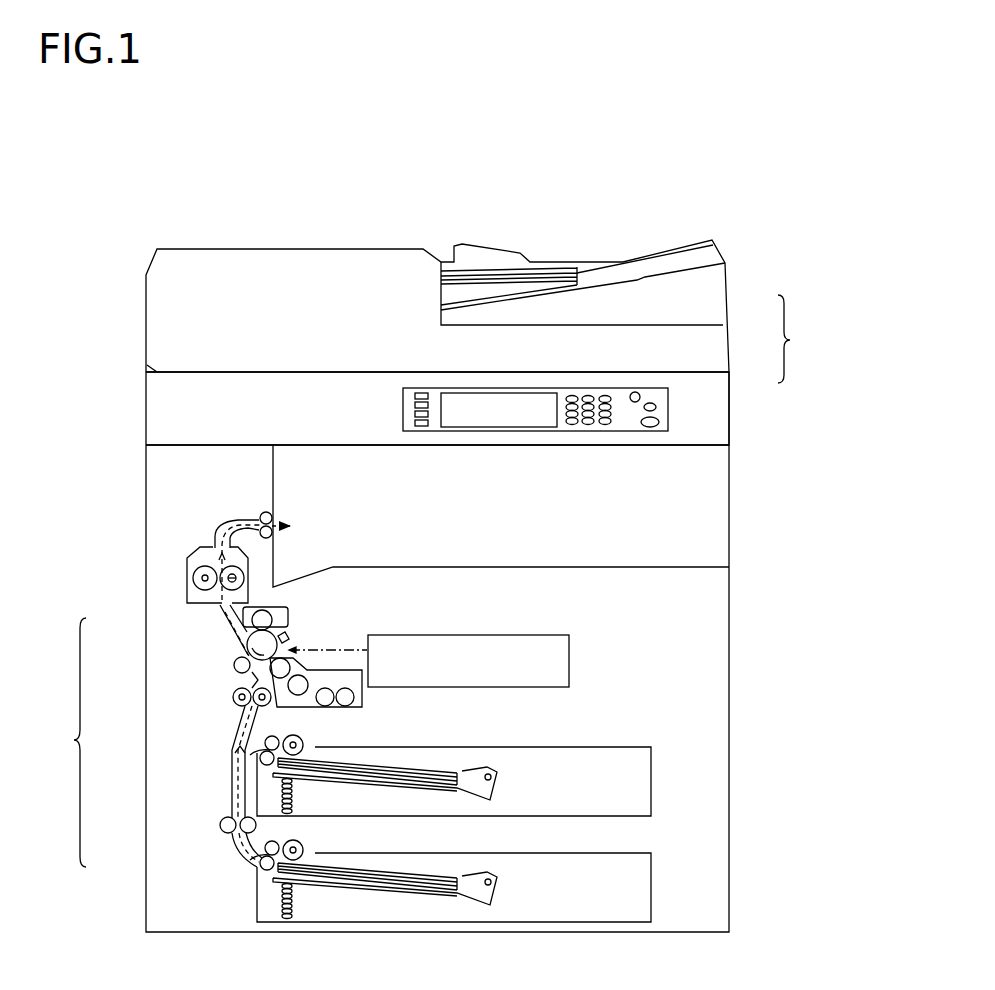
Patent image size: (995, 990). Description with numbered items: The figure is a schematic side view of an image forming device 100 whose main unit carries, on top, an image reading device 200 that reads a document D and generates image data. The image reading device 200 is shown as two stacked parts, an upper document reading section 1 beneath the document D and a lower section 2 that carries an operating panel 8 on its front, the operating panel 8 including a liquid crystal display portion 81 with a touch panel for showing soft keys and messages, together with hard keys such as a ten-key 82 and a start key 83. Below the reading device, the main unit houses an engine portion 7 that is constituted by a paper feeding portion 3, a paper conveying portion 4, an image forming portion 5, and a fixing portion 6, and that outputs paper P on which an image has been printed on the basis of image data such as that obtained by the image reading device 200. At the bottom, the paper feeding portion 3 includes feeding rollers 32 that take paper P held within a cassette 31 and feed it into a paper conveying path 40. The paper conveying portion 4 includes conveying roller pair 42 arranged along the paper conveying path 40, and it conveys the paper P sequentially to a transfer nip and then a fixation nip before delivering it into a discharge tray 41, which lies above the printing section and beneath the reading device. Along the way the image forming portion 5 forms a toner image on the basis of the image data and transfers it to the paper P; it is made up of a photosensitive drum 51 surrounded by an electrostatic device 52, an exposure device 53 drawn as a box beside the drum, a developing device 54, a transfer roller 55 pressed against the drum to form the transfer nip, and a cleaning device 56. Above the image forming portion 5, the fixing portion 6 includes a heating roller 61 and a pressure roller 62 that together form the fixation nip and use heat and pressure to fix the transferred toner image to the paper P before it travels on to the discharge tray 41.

The image forming device 100 is at (128, 247).
The image reading device 200 is at (806, 339).
The image reading unit 1 is at (732, 322).
The operation unit section 2 is at (732, 387).
The document D is at (480, 266).
The operating panel 8 is at (590, 449).
The liquid crystal display portion 81 is at (487, 417).
The 10-key 82 is at (588, 421).
The start key 83 is at (653, 423).
The discharge tray 41 is at (448, 566).
The fixing portion 6 is at (205, 589).
The heating roller 61 is at (244, 578).
The pressure roller 62 is at (193, 578).
The conveying roller pair 42 is at (262, 514).
The paper conveying path 40 is at (231, 770).
The image forming portion 5 is at (327, 659).
The photosensitive drum 51 is at (246, 643).
The electrostatic device 52 is at (288, 640).
The exposure device 53 is at (463, 642).
The developing device 54 is at (360, 705).
The transfer roller 55 is at (236, 670).
The cleaning device 56 is at (287, 607).
The engine portion 7 is at (70, 742).
The paper conveying portion 4 is at (216, 791).
The feeding rollers 32 is at (303, 742).
The paper feeding portion 3 is at (372, 813).
The cassette 31 is at (617, 746).
The paper P is at (437, 762).